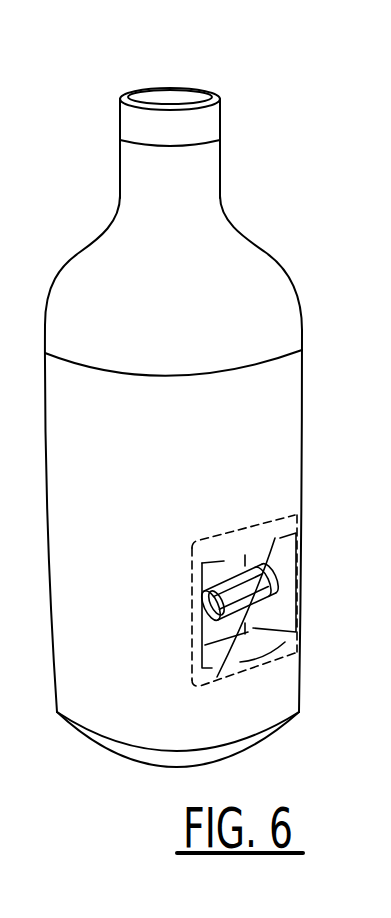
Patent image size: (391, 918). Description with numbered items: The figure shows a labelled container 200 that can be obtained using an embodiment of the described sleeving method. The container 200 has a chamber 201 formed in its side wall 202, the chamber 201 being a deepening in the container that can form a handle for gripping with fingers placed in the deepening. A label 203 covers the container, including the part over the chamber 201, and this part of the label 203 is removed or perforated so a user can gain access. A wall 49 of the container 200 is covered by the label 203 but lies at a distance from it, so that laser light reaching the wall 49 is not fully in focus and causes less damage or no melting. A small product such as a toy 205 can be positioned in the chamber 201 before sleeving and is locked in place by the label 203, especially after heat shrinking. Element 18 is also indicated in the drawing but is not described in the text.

The container 200 is at (266, 160).
The chamber 201 is at (222, 570).
The side wall 202 is at (97, 277).
The label 203 is at (287, 373).
The toy 205 is at (278, 590).
The wall 49 is at (205, 635).
The element 18 is at (384, 471).